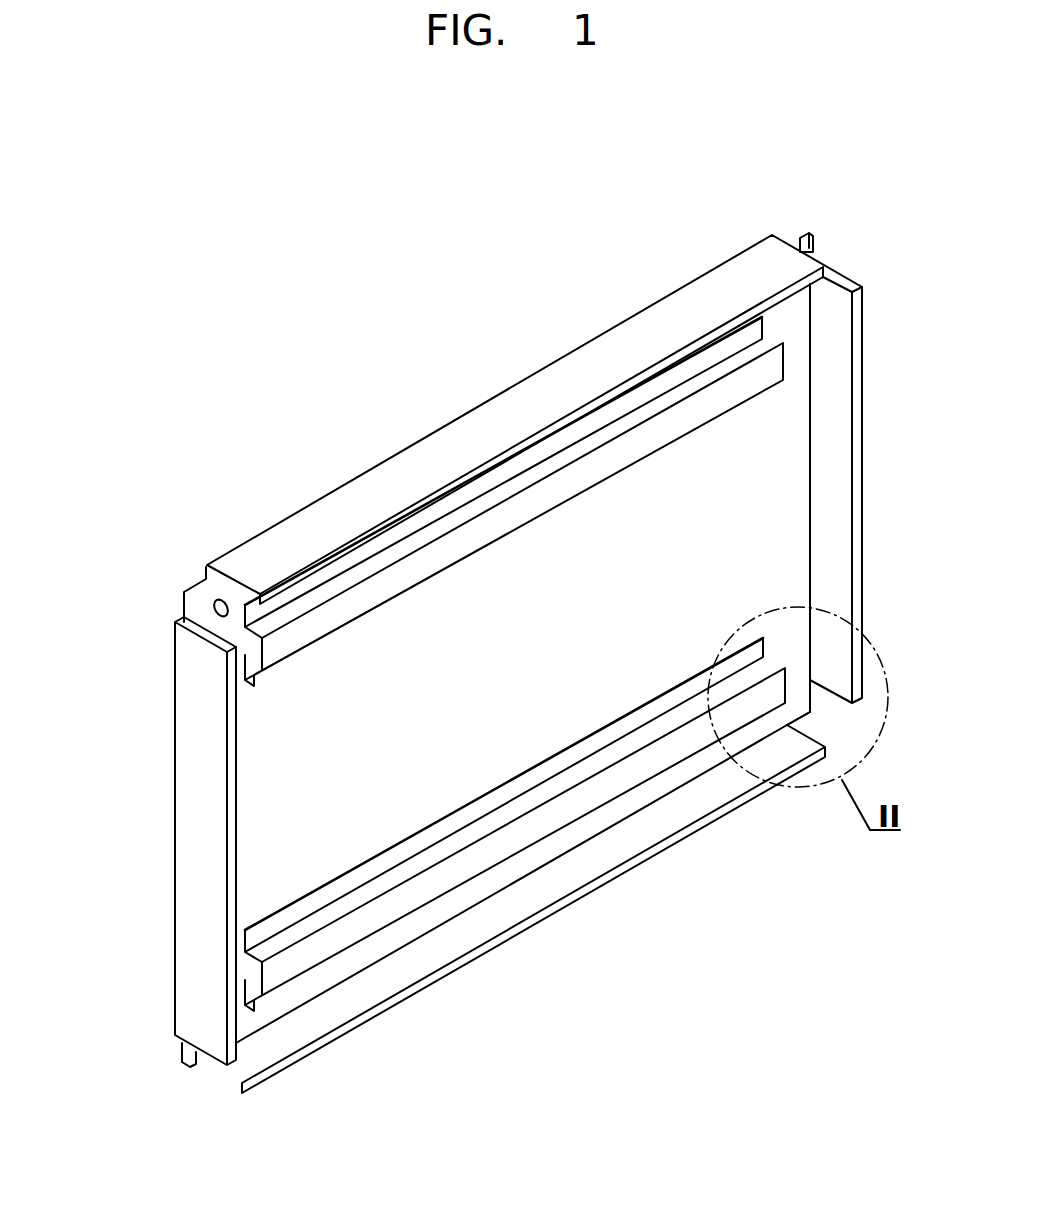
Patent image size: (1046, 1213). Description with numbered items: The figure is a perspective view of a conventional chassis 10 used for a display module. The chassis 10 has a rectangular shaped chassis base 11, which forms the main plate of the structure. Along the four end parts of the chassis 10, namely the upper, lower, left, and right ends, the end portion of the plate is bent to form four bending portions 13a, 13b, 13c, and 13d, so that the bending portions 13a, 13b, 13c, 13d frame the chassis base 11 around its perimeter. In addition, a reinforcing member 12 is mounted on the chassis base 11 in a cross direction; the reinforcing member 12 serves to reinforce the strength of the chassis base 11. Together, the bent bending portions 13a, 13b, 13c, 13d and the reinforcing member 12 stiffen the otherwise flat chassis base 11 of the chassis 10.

The chassis 10 is at (435, 663).
The chassis base 11 is at (262, 797).
The reinforcing member 12 is at (655, 432).
The bending portion 13a is at (840, 440).
The bending portion 13b is at (482, 928).
The bending portion 13c is at (190, 715).
The bending portion 13d is at (487, 430).